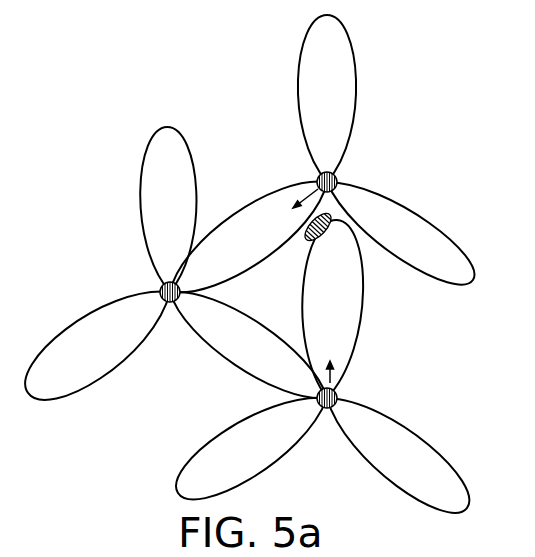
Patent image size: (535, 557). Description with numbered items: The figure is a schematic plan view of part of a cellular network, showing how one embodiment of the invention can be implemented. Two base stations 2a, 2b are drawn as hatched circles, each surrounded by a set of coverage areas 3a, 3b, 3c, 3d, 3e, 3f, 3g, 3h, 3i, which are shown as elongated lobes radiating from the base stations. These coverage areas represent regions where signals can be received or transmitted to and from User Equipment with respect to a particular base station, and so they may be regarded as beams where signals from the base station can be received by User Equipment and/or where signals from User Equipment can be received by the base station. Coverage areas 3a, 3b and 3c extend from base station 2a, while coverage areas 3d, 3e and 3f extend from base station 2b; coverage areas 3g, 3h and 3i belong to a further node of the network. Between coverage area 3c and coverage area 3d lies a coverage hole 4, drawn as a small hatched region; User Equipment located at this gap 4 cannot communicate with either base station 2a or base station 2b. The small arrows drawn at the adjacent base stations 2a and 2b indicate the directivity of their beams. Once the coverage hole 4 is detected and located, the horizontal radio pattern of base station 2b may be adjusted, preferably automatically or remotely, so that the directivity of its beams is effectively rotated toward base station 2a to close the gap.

The base station 2a is at (337, 181).
The base station 2b is at (338, 396).
The coverage area 3a is at (338, 108).
The coverage area 3b is at (413, 245).
The coverage area 3c is at (268, 248).
The coverage area 3d is at (344, 318).
The coverage area 3e is at (409, 468).
The coverage area 3f is at (264, 461).
The coverage area 3g is at (258, 358).
The coverage area 3h is at (108, 358).
The coverage area 3i is at (178, 220).
The coverage hole 4 is at (306, 242).